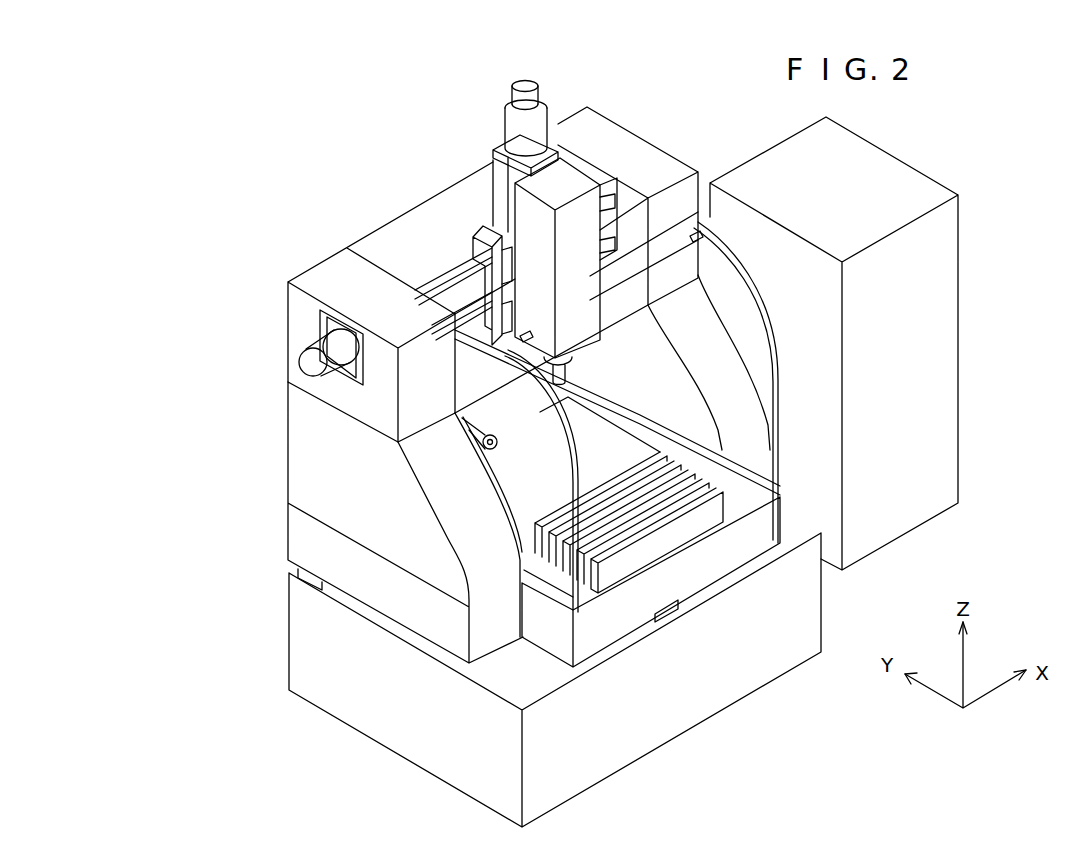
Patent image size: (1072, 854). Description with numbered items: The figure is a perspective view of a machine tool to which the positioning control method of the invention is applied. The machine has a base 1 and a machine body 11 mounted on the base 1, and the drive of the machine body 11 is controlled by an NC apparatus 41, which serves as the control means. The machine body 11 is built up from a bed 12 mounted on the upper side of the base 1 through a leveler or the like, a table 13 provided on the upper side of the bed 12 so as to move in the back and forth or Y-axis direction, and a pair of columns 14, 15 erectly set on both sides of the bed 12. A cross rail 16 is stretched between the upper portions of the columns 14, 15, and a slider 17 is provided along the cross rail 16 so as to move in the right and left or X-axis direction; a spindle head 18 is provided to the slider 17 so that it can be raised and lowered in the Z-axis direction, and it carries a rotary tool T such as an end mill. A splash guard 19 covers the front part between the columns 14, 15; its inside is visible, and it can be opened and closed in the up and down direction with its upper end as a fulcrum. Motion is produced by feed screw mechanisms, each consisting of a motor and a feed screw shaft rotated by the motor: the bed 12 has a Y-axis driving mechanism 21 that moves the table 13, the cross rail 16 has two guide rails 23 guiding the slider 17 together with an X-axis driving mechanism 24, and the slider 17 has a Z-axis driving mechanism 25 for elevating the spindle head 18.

The base 1 is at (728, 693).
The machine body 11 is at (690, 150).
The bed 12 is at (710, 567).
The table 13 is at (608, 437).
The column 14 is at (302, 430).
The column 15 is at (707, 307).
The cross rail 16 is at (383, 238).
The slider 17 is at (483, 227).
The spindle head 18 is at (568, 175).
The splash guard 19 is at (755, 318).
The Y-axis driving mechanism 21 is at (482, 434).
The guide rail 23 is at (470, 318).
The X-axis driving mechanism 24 is at (310, 363).
The Z-axis driving mechanism 25 is at (527, 82).
The NC apparatus 41 is at (910, 163).
The rotary tool T is at (573, 373).